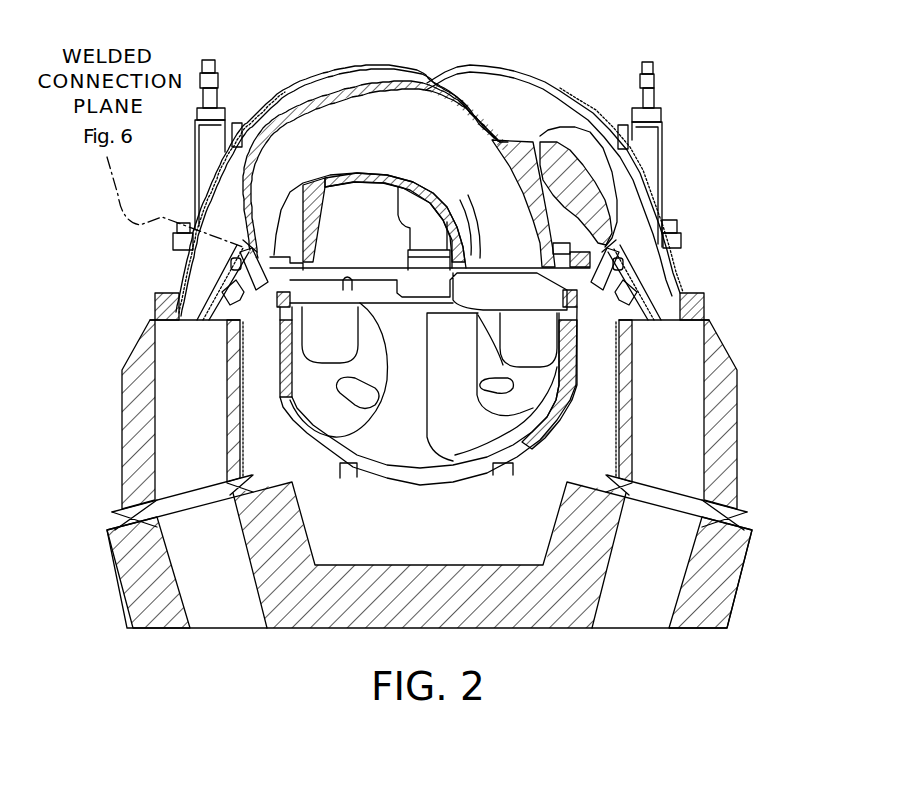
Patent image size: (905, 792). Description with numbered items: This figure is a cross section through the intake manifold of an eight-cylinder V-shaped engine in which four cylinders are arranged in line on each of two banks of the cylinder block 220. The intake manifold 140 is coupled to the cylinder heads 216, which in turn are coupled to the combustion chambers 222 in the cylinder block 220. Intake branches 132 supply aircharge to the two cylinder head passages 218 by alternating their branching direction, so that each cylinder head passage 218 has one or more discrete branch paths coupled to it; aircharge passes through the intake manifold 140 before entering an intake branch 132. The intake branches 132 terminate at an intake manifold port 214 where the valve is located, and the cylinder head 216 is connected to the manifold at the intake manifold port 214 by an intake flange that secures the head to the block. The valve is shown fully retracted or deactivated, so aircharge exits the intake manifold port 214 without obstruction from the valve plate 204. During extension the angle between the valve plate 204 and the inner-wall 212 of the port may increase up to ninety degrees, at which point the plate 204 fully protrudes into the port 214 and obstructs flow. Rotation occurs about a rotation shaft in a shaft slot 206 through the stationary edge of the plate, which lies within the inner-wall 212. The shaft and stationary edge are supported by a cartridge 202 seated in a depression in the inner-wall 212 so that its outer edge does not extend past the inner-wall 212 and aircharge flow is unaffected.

The intake branch 132 is at (241, 184).
The intake manifold 140 is at (355, 144).
The cartridge 202 is at (260, 252).
The valve plate 204 is at (215, 272).
The shaft slot 206 is at (247, 238).
The inner-wall 212 is at (240, 301).
The intake manifold port 214 is at (112, 233).
The cylinder head 216 is at (126, 410).
The cylinder head passage 218 is at (173, 421).
The cylinder block 220 is at (413, 609).
The combustion chamber 222 is at (191, 566).